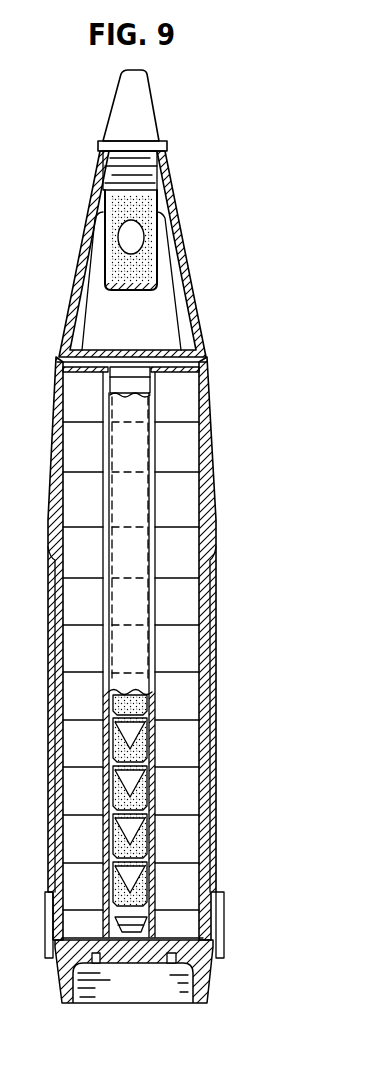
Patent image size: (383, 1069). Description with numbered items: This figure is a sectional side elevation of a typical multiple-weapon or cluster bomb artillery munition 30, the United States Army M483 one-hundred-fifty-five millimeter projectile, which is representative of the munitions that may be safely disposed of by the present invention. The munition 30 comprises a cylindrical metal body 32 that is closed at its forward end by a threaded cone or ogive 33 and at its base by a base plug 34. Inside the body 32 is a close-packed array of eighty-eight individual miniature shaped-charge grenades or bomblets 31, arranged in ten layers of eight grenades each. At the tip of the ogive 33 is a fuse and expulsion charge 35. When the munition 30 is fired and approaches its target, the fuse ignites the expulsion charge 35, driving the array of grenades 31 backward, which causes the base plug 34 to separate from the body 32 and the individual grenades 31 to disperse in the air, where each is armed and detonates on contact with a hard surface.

The munition 30 is at (207, 339).
The grenades 31 is at (183, 452).
The cylindrical metal body 32 is at (216, 650).
The ogive 33 is at (188, 250).
The base plug 34 is at (212, 977).
The fuse and expulsion charge 35 is at (128, 198).